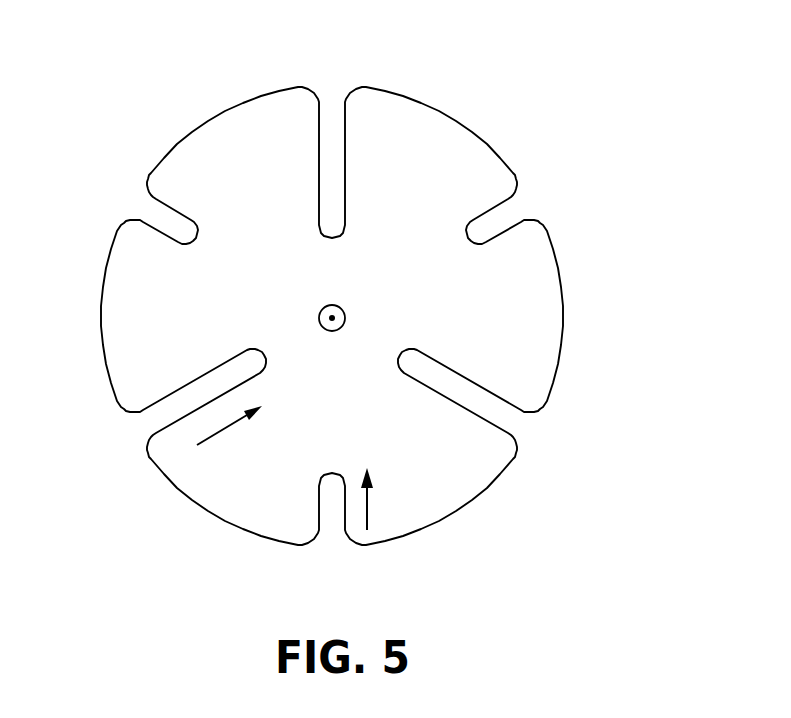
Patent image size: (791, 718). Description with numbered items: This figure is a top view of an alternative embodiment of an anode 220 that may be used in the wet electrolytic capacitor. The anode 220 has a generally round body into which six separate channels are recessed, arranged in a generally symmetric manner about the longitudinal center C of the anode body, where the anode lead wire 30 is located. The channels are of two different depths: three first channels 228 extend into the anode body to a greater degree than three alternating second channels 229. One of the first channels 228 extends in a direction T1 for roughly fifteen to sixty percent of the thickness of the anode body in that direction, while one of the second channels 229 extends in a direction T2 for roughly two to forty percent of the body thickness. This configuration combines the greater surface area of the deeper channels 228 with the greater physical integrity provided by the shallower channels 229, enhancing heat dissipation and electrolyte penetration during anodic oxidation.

The anode 220 is at (625, 131).
The first channels 228 is at (333, 118).
The second channels 229 is at (148, 198).
The anode lead wire 30 is at (334, 304).
The longitudinal center C is at (333, 319).
The direction of first channel extent T1 is at (229, 436).
The direction of second channel extent T2 is at (382, 499).